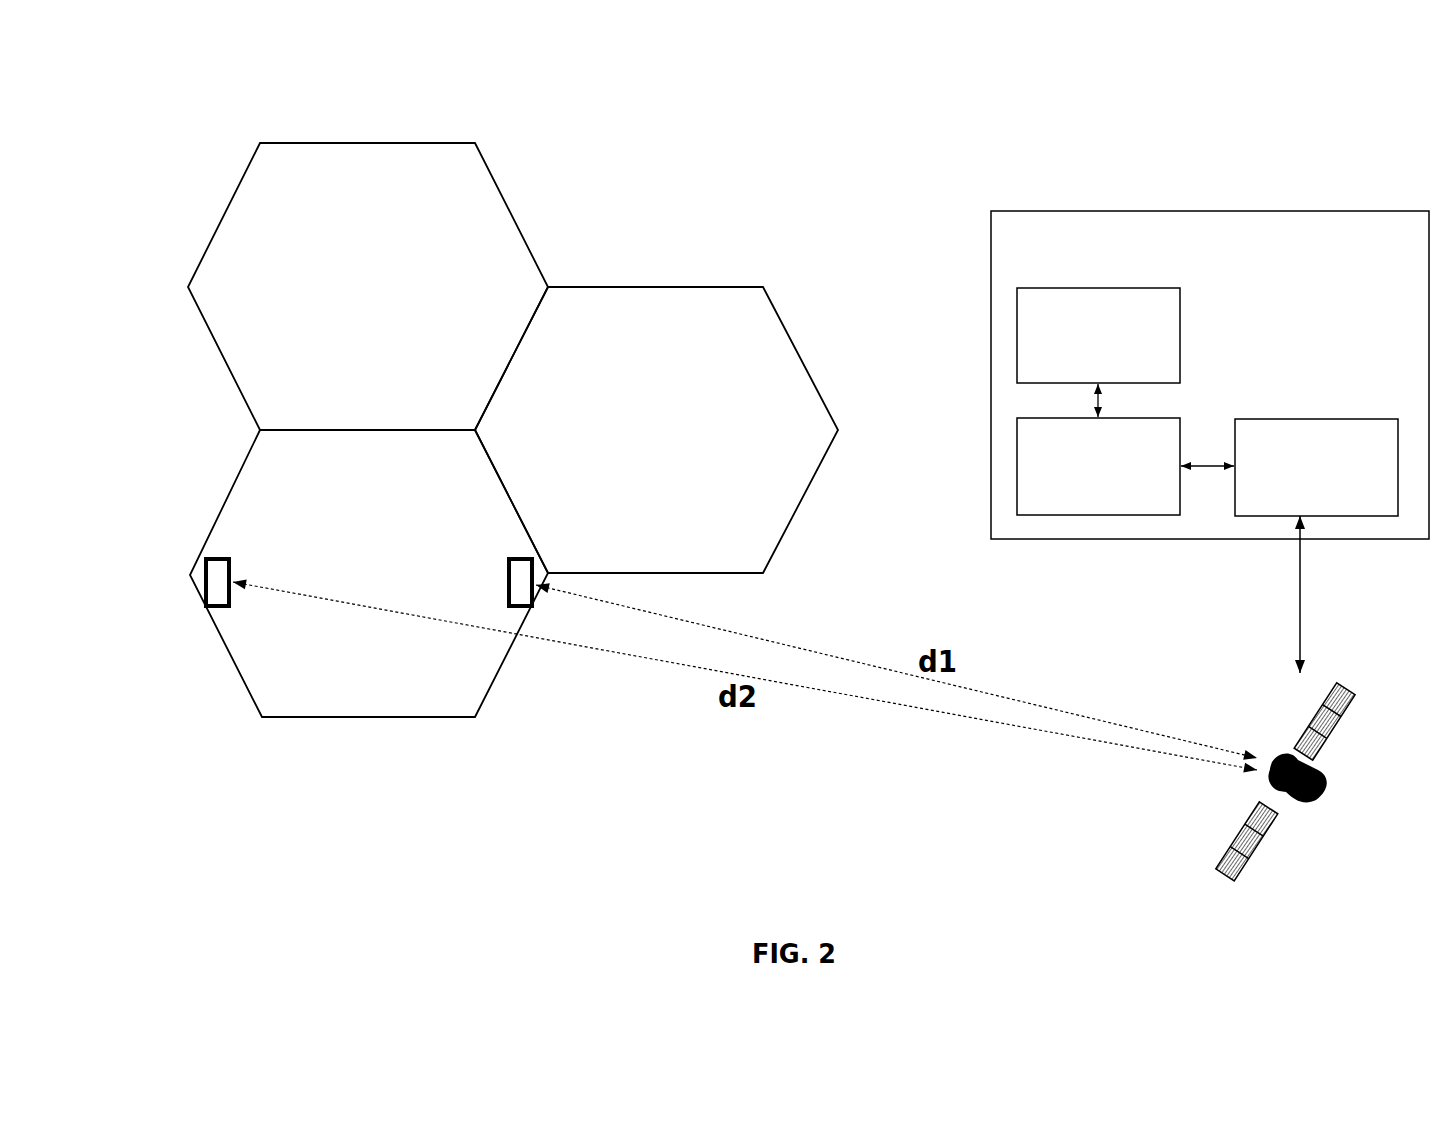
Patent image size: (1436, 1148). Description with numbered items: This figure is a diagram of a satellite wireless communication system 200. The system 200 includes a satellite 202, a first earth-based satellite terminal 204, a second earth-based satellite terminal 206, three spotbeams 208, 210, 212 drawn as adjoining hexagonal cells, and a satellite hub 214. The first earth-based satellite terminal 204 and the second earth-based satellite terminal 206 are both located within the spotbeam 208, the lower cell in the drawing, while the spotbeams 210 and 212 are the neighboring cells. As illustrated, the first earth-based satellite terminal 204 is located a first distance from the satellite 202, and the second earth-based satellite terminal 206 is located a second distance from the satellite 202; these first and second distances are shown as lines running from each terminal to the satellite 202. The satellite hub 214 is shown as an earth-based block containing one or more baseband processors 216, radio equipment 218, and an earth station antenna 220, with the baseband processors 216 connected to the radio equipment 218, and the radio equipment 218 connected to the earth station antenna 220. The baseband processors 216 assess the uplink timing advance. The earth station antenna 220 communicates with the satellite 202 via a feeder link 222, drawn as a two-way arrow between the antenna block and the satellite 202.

The satellite wireless communication system 200 is at (1273, 90).
The satellite 202 is at (1314, 727).
The first earth-based satellite terminal 204 is at (534, 556).
The second earth-based satellite terminal 206 is at (203, 560).
The spotbeam 208 is at (368, 722).
The spotbeam 210 is at (512, 211).
The spotbeam 212 is at (810, 372).
The satellite hub 214 is at (1228, 271).
The baseband processors 216 is at (1115, 375).
The radio equipment 218 is at (1115, 506).
The earth station antenna 220 is at (1383, 507).
The feeder link 222 is at (1303, 598).